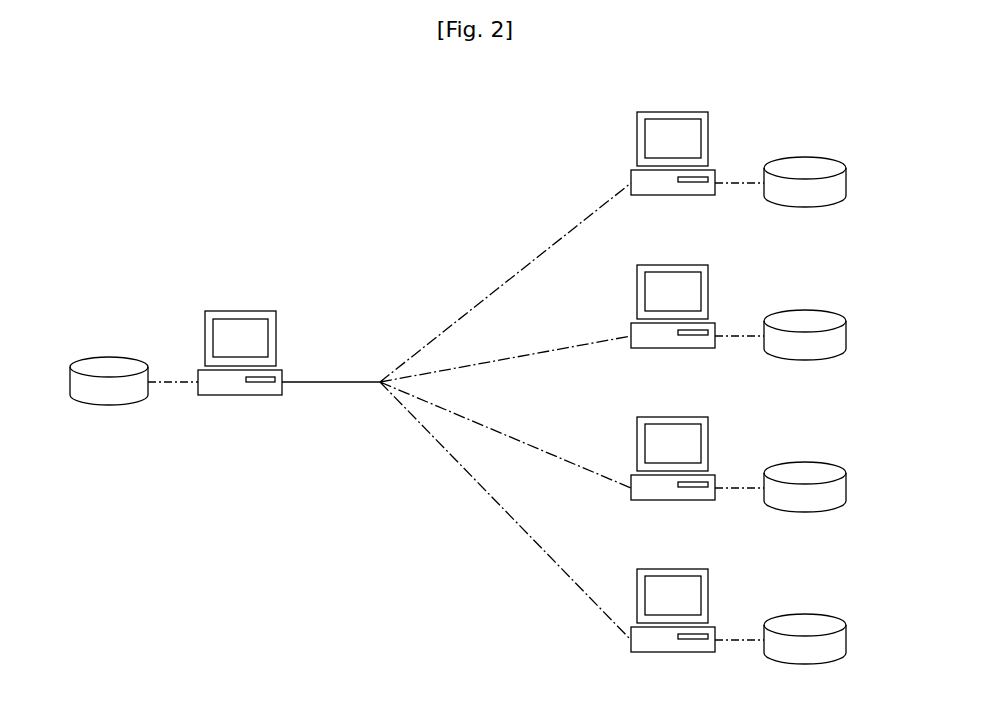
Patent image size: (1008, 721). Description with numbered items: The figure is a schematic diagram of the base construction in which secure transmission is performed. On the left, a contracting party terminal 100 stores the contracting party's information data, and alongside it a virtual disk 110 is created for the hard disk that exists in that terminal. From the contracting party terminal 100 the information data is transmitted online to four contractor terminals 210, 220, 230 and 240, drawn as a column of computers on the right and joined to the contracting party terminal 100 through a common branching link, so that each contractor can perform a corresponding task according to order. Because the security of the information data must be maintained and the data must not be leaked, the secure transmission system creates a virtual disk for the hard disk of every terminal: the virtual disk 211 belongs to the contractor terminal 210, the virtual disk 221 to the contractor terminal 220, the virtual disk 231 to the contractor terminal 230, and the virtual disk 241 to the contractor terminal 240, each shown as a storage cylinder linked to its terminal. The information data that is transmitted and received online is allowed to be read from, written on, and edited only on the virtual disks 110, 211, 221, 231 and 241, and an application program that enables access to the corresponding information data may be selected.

The contracting party terminal 100 is at (238, 311).
The virtual disk 110 is at (111, 368).
The contractor terminal 210 is at (672, 112).
The virtual disk 211 is at (805, 168).
The contractor terminal 220 is at (672, 265).
The virtual disk 221 is at (805, 321).
The contractor terminal 230 is at (672, 417).
The virtual disk 231 is at (805, 473).
The contractor terminal 240 is at (672, 569).
The virtual disk 241 is at (805, 625).